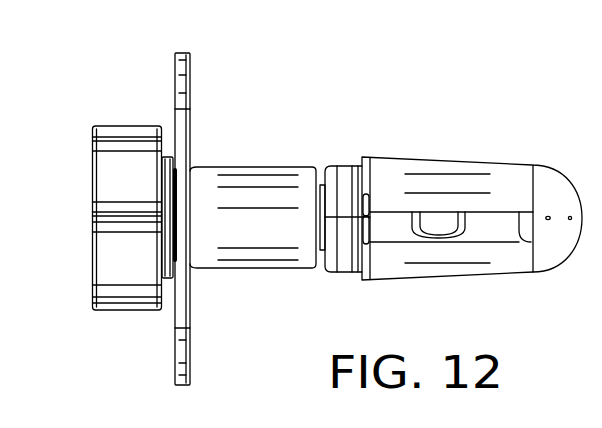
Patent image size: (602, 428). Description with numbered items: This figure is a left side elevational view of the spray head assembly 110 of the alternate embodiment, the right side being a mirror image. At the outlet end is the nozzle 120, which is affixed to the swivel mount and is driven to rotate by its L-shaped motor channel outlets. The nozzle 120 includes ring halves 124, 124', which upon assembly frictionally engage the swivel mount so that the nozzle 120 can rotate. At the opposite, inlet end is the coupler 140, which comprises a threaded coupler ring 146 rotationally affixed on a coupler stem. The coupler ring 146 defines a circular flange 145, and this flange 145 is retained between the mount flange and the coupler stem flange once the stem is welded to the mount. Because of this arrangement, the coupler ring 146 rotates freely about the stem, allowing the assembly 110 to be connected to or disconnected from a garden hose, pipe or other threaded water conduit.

The spray head assembly 110 is at (300, 225).
The nozzle 120 is at (447, 150).
The ring half 124 is at (358, 171).
The ring half 124' is at (324, 249).
The coupler 140 is at (125, 120).
The circular flange 145 is at (169, 284).
The threaded coupler ring 146 is at (116, 265).